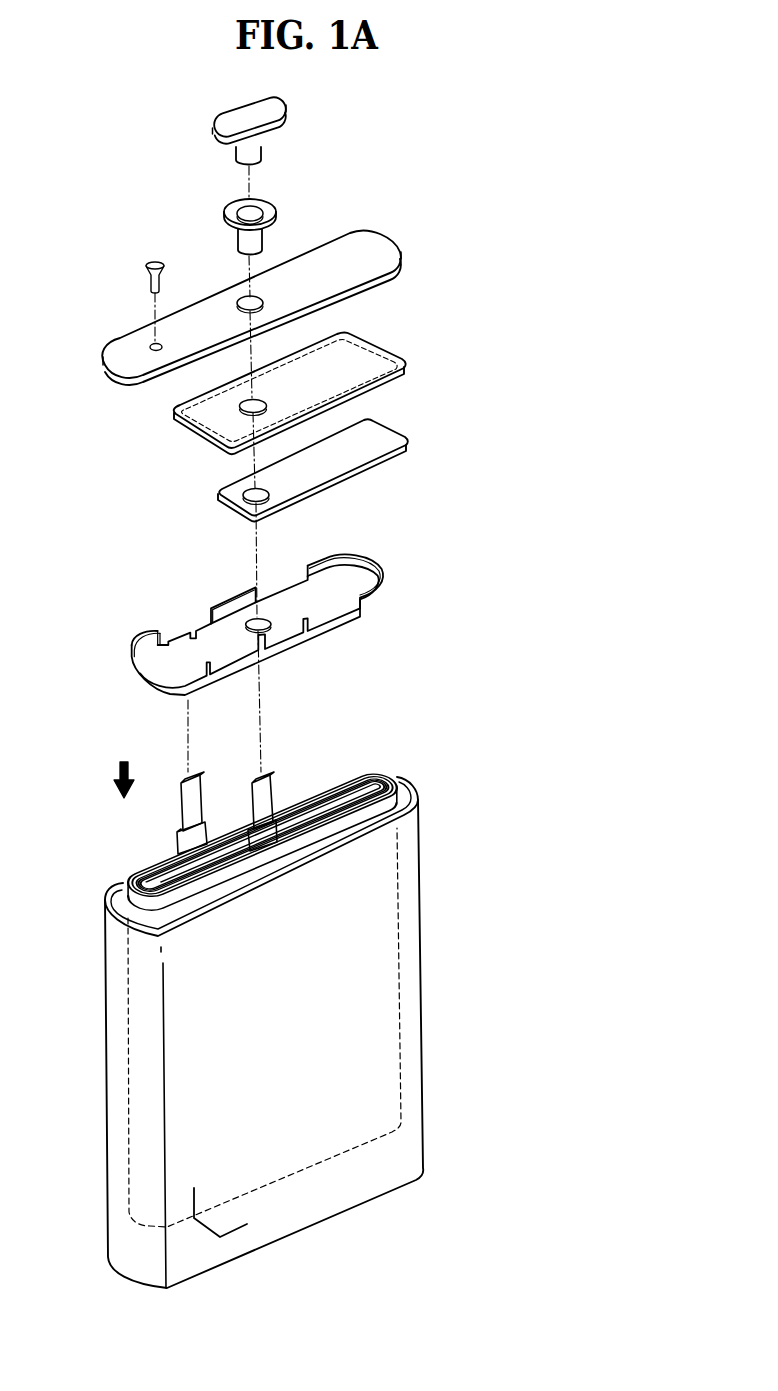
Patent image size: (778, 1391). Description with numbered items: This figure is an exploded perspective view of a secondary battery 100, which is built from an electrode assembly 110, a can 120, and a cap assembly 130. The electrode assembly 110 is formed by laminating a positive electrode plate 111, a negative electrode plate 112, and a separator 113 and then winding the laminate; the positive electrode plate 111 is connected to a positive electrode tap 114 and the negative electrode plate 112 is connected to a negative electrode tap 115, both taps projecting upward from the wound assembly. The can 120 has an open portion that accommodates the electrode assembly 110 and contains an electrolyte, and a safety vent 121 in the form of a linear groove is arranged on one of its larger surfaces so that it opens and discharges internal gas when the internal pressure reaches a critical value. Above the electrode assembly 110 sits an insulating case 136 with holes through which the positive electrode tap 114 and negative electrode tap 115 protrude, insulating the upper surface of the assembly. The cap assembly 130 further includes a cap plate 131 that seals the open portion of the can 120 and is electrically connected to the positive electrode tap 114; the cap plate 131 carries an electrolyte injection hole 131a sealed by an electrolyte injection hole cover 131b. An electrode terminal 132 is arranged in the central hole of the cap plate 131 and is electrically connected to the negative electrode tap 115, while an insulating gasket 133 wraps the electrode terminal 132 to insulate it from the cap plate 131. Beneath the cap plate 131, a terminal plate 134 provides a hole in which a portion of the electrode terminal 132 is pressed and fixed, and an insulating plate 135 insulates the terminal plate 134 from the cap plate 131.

The secondary battery 100 is at (118, 136).
The electrode assembly 110 is at (467, 752).
The positive electrode plate 111 is at (388, 781).
The negative electrode plate 112 is at (360, 775).
The separator 113 is at (375, 777).
The positive electrode tap 114 is at (198, 795).
The negative electrode tap 115 is at (265, 797).
The can 120 is at (420, 932).
The safety vent 121 is at (210, 1236).
The cap assembly 130 is at (541, 131).
The cap plate 131 is at (370, 251).
The electrolyte injection hole 131a is at (150, 343).
The electrolyte injection hole cover 131b is at (152, 261).
The electrode terminal 132 is at (278, 101).
The insulating gasket 133 is at (267, 199).
The terminal plate 134 is at (370, 434).
The insulating plate 135 is at (367, 341).
The insulating case 136 is at (363, 570).